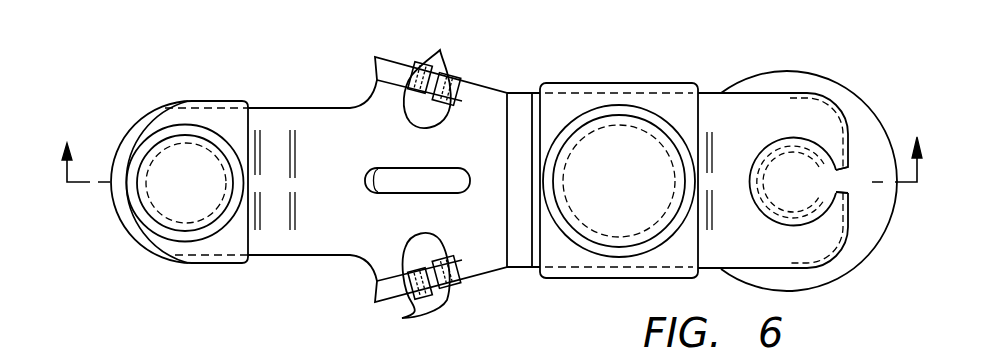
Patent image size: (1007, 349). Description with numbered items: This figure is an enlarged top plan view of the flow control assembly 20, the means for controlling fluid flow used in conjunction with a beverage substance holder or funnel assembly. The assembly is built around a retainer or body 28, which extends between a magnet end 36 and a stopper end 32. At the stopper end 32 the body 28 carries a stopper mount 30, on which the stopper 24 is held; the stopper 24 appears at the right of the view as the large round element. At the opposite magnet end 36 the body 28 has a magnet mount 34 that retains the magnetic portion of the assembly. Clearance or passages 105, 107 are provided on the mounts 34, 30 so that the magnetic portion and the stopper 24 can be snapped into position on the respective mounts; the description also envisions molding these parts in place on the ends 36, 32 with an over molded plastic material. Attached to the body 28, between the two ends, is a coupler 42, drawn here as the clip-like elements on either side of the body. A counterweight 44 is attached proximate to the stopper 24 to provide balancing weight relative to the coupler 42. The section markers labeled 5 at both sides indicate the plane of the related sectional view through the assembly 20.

The section line 5- 5 is at (495, 137).
The flow control assembly 20 is at (138, 80).
The stopper 24 is at (897, 218).
The body 28 is at (602, 62).
The stopper mount 30 is at (830, 143).
The stopper end 32 is at (746, 50).
The magnet mount 34 is at (230, 250).
The magnet end 36 is at (310, 67).
The coupler 42 is at (518, 346).
The counterweight 44 is at (640, 147).
The passage 105 is at (238, 117).
The passage 107 is at (830, 174).